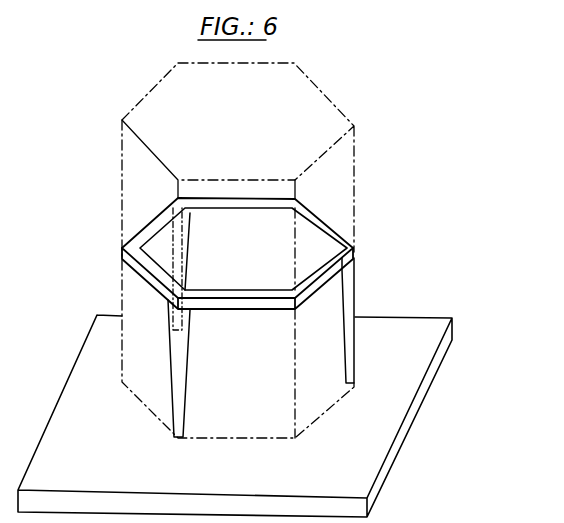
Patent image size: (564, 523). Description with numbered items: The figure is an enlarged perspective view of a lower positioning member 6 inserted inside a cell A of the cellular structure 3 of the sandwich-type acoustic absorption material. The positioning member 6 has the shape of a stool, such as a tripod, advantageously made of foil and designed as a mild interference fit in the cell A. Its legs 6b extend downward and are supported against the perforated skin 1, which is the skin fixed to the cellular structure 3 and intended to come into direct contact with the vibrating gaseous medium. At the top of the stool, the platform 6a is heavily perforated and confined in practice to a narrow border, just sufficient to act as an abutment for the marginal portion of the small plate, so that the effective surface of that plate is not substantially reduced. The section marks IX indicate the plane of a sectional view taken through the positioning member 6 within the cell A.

The skin 1 is at (336, 477).
The core of cellular structure 3 is at (112, 148).
The positioning member 6 is at (213, 253).
The platform 6a is at (253, 295).
The legs 6b is at (182, 402).
The cell A is at (145, 350).
The section line IX- IX is at (142, 85).